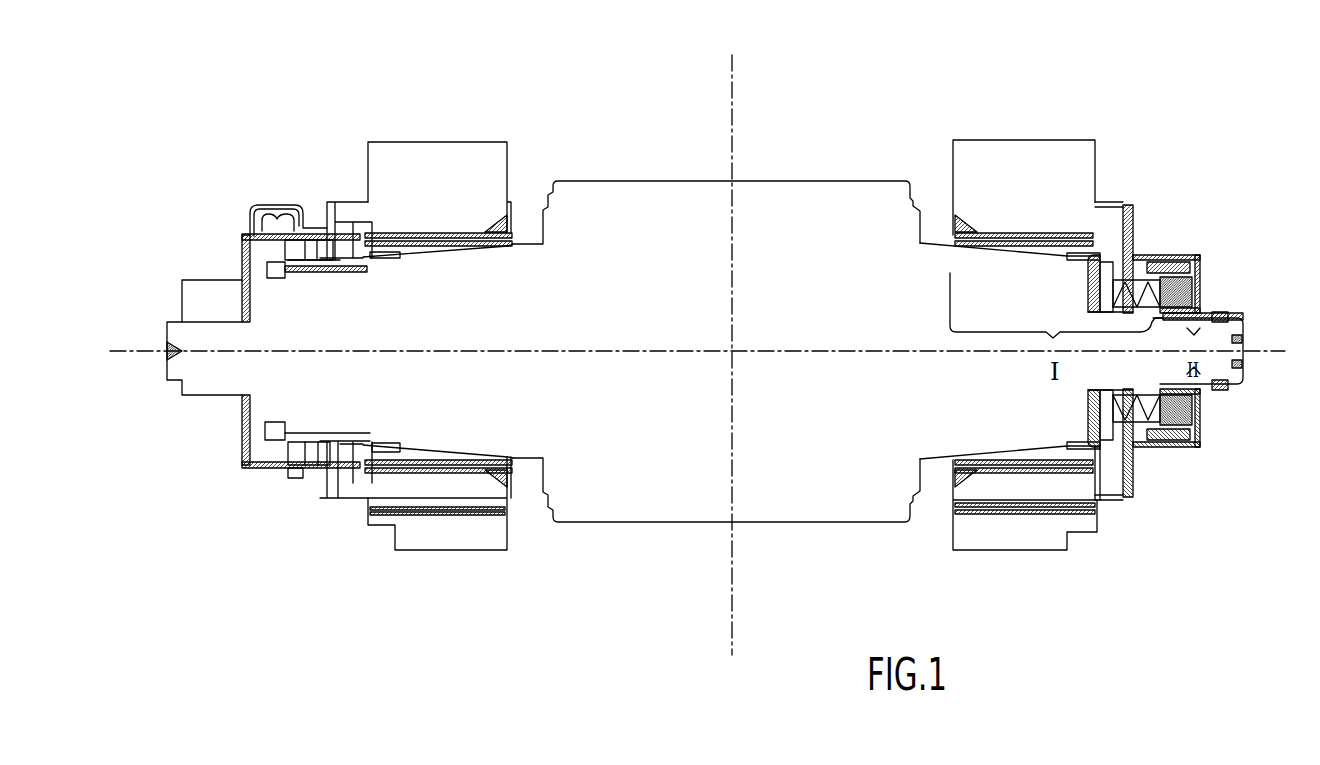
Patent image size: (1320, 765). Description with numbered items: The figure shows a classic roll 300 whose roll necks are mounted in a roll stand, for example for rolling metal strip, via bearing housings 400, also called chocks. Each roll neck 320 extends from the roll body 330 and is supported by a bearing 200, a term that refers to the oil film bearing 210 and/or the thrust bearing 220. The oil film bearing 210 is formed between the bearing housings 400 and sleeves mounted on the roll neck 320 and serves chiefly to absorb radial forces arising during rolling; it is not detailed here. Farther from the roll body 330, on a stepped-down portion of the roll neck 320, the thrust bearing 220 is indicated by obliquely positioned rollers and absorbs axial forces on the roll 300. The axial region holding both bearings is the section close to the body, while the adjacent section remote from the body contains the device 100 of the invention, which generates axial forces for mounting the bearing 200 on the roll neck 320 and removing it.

The device for mounting and removing the bearing 100 is at (1227, 285).
The bearing 200 is at (1150, 252).
The oil film bearing 210 is at (938, 246).
The thrust bearing 220 is at (1203, 410).
The roll 300 is at (788, 208).
The roll neck 320 is at (362, 385).
The roll body 330 is at (920, 216).
The bearing housing 400 is at (1058, 177).